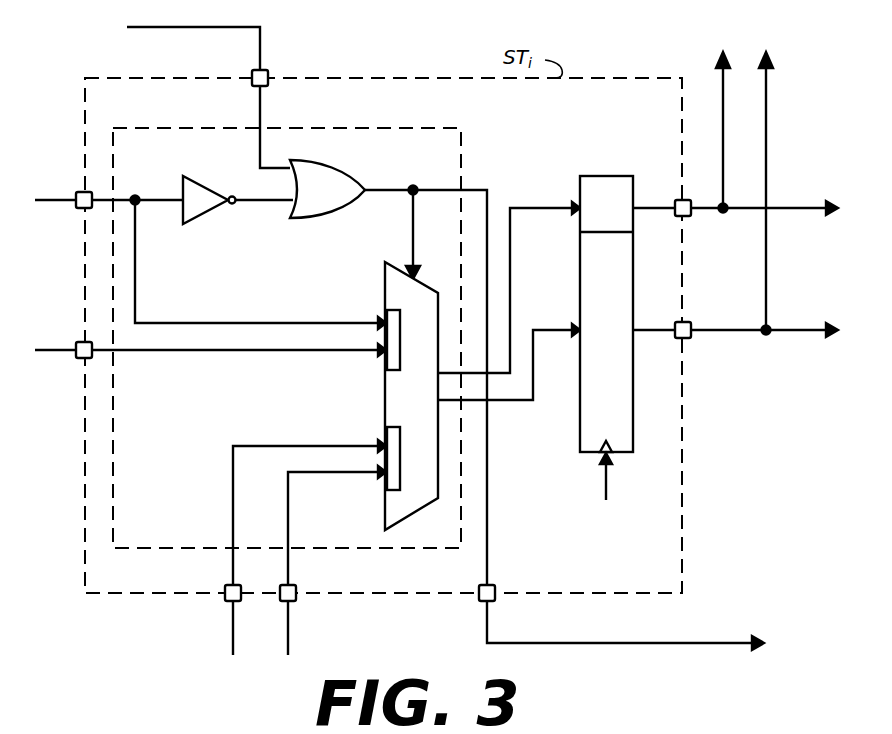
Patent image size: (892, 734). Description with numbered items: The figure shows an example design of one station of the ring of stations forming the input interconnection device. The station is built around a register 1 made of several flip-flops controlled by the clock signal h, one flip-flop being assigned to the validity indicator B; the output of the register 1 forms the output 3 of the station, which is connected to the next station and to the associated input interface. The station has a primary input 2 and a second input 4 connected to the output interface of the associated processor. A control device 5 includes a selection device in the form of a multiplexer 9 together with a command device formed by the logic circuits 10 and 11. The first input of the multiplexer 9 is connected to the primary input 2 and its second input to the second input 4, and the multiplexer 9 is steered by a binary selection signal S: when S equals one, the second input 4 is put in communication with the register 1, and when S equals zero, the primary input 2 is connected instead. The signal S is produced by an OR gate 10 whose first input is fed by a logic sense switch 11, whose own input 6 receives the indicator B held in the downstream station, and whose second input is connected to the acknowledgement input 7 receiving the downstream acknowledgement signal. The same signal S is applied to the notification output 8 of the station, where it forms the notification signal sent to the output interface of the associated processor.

The register 1 is at (580, 420).
The primary input 2 is at (78, 208).
The output 3 is at (691, 214).
The second input 4 is at (225, 598).
The control device 5 is at (461, 148).
The input of the sense switch 6 is at (135, 196).
The acknowledgement input 7 is at (268, 70).
The notification output 8 is at (479, 600).
The multiplexer 9 is at (385, 400).
The OR gate 10 is at (316, 212).
The logic sense switch 11 is at (195, 218).